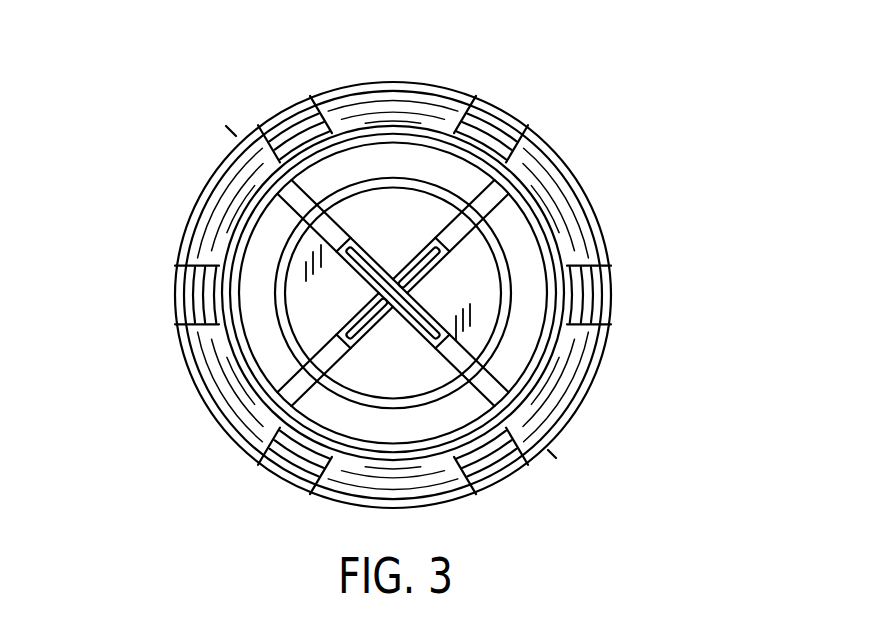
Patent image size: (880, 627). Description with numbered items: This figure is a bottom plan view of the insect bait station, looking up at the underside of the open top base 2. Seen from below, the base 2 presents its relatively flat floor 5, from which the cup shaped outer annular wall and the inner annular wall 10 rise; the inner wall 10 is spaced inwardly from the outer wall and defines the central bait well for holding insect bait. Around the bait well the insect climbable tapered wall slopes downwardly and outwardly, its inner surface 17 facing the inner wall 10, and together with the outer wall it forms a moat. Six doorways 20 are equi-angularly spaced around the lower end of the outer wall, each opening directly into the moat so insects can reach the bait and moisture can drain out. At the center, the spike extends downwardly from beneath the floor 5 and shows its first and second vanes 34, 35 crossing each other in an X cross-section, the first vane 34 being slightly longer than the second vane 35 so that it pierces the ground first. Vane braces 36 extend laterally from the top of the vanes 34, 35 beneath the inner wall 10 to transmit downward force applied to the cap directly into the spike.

The base 2 is at (220, 432).
The floor 5 is at (146, 127).
The inner annular wall 10 is at (400, 183).
The inner surface 17 is at (250, 243).
The doorways 20 is at (280, 102).
The first vane 34 is at (368, 313).
The second vane 35 is at (415, 303).
The vane braces 36 is at (345, 243).